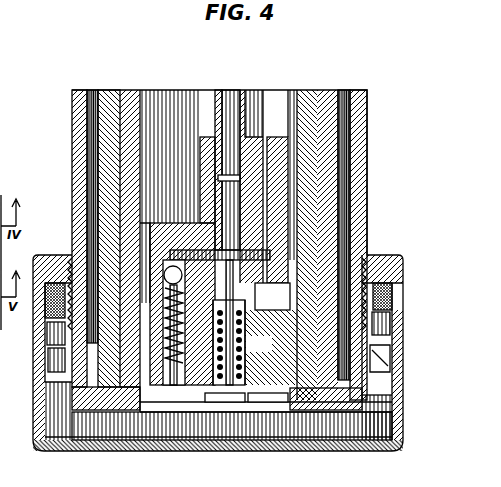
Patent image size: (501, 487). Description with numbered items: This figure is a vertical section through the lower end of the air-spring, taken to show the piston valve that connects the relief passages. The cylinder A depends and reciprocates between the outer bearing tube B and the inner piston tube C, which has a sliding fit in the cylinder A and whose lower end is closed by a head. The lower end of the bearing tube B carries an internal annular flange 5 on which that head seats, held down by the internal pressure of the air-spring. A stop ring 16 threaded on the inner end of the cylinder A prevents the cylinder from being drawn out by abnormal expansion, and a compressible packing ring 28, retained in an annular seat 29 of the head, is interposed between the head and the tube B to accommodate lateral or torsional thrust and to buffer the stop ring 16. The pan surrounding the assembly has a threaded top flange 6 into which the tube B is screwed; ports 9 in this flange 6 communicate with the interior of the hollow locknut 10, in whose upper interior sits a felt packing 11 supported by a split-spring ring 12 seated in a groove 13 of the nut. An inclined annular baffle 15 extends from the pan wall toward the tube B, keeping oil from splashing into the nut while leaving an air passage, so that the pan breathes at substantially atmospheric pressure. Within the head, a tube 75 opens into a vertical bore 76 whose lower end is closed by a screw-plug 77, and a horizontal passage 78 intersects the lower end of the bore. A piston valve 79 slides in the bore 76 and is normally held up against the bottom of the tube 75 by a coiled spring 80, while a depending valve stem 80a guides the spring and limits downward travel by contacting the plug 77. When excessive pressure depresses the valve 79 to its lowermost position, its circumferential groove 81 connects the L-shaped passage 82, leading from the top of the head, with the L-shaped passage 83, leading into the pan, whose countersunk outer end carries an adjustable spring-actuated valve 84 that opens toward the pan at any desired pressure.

The bearing tube B is at (80, 88).
The cylinder A is at (110, 88).
The piston tube C is at (133, 88).
The tube 75 is at (213, 140).
The passage 82 is at (265, 148).
The bore 76 is at (220, 180).
The piston valve 79 is at (219, 190).
The passage 83 is at (192, 250).
The adjustable spring-actuated valve 84 is at (167, 267).
The stop ring 16 is at (72, 264).
The locknut 10 is at (368, 257).
The packing 11 is at (390, 257).
The groove 13 is at (393, 313).
The split-spring ring 12 is at (388, 348).
The top flange 6 is at (47, 333).
The ports 9 is at (48, 356).
The baffle 15 is at (43, 428).
The internal annular flange 5 is at (103, 407).
The horizontal passage 78 is at (188, 388).
The valve stem 80a is at (228, 365).
The screw-plug 77 is at (245, 415).
The annular seat 29 is at (305, 395).
The compressible packing ring 28 is at (322, 397).
The circumferential groove 81 is at (272, 296).
The coiled spring 80 is at (240, 342).